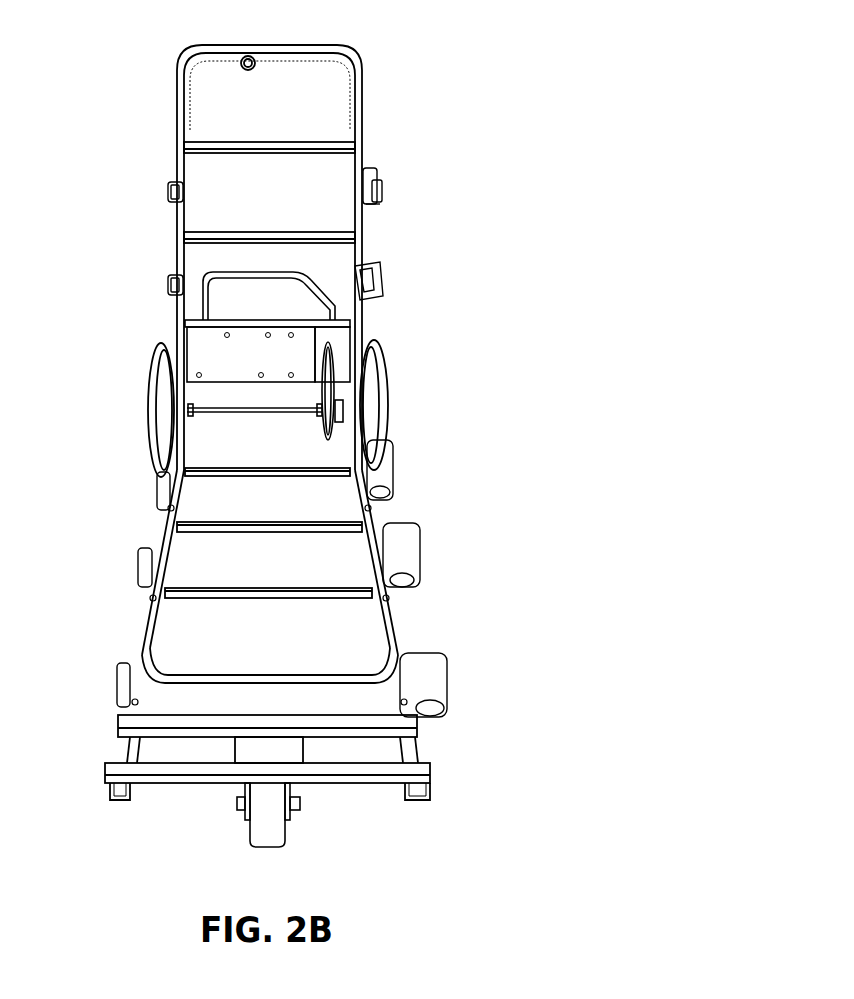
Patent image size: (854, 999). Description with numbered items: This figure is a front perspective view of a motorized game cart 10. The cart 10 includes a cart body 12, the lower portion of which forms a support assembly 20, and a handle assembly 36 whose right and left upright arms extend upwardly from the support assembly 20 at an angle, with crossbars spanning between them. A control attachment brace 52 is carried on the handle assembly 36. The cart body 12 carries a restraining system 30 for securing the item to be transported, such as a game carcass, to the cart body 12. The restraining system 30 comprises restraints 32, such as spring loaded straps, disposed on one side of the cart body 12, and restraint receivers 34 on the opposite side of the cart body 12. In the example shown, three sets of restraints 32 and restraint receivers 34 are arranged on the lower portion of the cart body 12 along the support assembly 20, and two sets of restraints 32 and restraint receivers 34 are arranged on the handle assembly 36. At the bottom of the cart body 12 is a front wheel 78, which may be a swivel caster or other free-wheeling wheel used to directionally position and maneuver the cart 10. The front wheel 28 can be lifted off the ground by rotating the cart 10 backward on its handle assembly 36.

The cart 10 is at (483, 90).
The cart body 12 is at (86, 436).
The support assembly 20 is at (119, 606).
The front wheel 28 is at (407, 723).
The restraining system 30 is at (88, 447).
The restraints 32 is at (380, 172).
The restraint receivers 34 is at (168, 285).
The handle assembly 36 is at (383, 235).
The control attachment braces 52 is at (202, 360).
The front wheel 78 is at (273, 823).